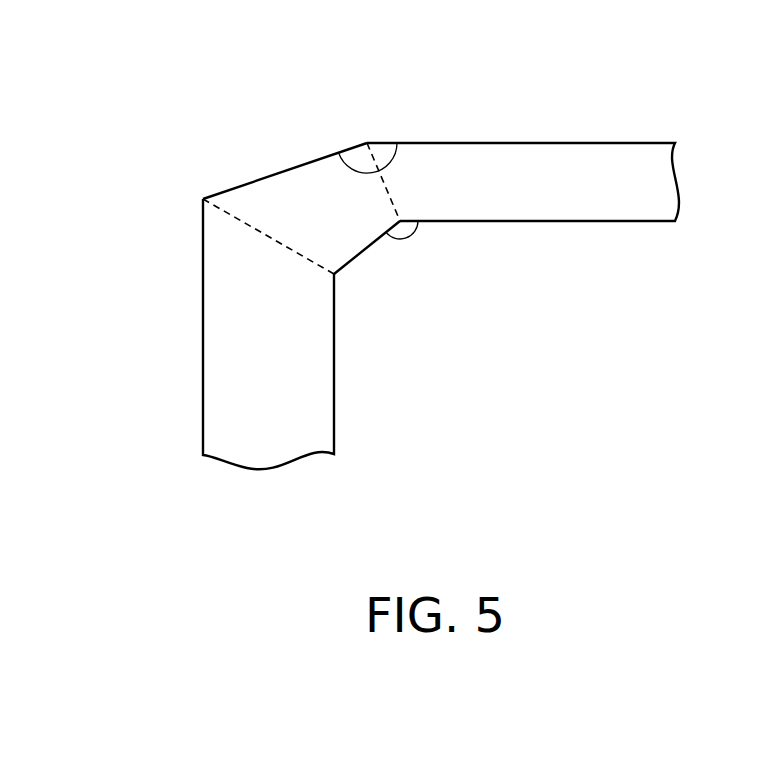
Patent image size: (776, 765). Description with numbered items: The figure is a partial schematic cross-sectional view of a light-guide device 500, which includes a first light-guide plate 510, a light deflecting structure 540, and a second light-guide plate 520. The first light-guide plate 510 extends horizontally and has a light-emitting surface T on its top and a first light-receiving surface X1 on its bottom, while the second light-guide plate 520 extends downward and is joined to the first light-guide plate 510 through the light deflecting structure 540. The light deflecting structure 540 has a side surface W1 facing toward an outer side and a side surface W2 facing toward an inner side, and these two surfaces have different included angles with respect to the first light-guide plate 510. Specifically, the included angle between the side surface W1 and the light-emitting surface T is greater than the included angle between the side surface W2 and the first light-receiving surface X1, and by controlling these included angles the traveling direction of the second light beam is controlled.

The light-guide device 500 is at (521, 490).
The first light-guide plate 510 is at (645, 182).
The second light-guide plate 520 is at (233, 292).
The light deflecting structure 540 is at (267, 193).
The light-emitting surface T is at (442, 140).
The side surface W1 is at (298, 165).
The side surface W2 is at (358, 255).
The first light-receiving surface X1 is at (458, 223).